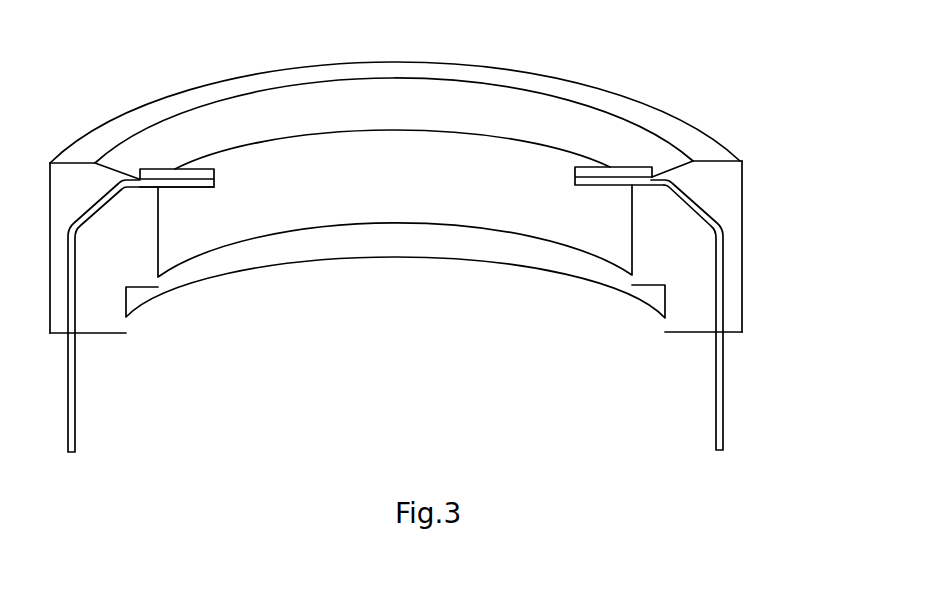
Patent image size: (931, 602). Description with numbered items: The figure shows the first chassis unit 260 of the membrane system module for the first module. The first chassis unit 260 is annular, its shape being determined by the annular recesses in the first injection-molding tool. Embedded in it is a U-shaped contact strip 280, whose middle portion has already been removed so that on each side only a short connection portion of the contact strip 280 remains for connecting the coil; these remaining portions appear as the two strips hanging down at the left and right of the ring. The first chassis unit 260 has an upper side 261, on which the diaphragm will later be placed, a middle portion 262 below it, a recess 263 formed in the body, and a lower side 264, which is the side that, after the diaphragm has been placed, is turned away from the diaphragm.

The first chassis unit 260 is at (698, 137).
The upper side 261 is at (103, 130).
The middle portion 262 is at (143, 223).
The recess 263 is at (140, 297).
The lower side 264 is at (95, 335).
The contact strip 280 is at (75, 435).